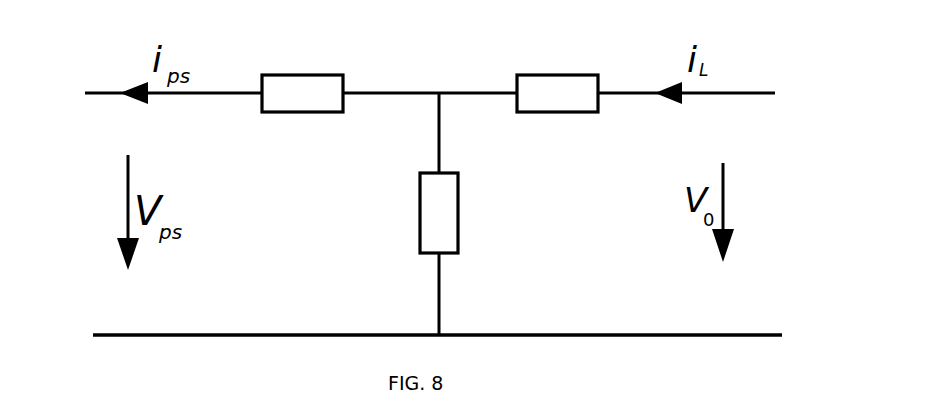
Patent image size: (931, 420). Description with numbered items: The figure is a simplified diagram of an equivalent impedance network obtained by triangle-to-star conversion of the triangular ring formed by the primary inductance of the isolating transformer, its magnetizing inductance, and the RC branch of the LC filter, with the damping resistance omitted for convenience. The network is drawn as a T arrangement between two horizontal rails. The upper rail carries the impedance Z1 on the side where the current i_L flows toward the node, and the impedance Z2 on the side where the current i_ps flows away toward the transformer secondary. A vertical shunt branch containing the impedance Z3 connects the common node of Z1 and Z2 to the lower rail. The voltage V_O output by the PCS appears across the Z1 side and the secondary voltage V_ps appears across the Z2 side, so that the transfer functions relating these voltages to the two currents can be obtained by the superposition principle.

The impedance Z1 is at (557, 73).
The impedance Z2 is at (302, 73).
The impedance Z3 is at (458, 213).